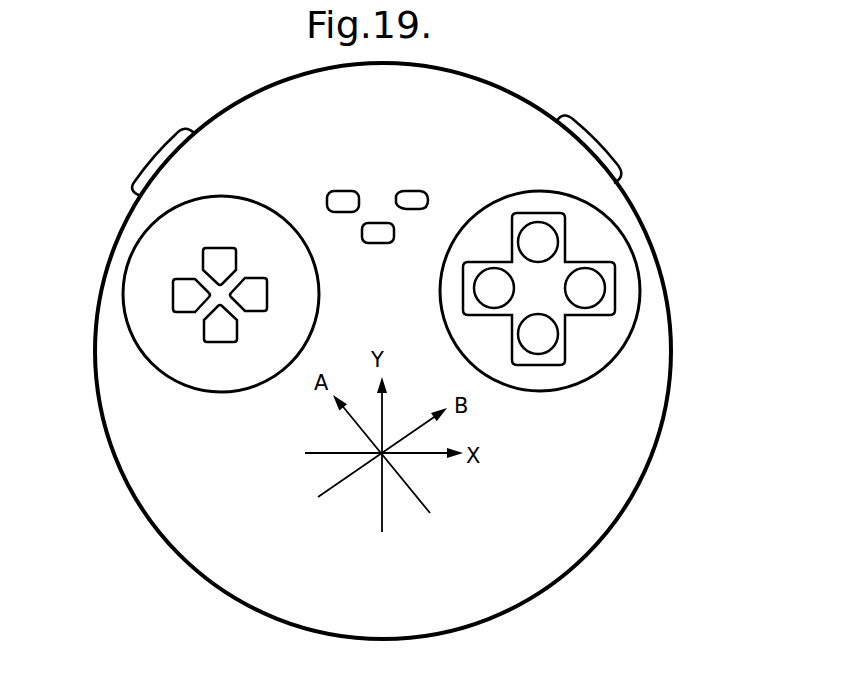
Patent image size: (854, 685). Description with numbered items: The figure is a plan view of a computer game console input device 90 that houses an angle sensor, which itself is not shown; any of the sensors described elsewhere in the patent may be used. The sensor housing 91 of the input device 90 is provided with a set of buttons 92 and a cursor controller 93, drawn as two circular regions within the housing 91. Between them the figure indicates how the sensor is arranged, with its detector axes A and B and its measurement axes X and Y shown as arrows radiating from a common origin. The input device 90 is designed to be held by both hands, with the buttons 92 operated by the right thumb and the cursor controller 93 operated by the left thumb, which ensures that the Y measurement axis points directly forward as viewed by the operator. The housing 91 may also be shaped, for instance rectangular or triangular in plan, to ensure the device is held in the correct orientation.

The computer game console input device 90 is at (105, 460).
The sensor housing 91 is at (97, 338).
The set of buttons 92 is at (165, 250).
The cursor controller 93 is at (622, 386).